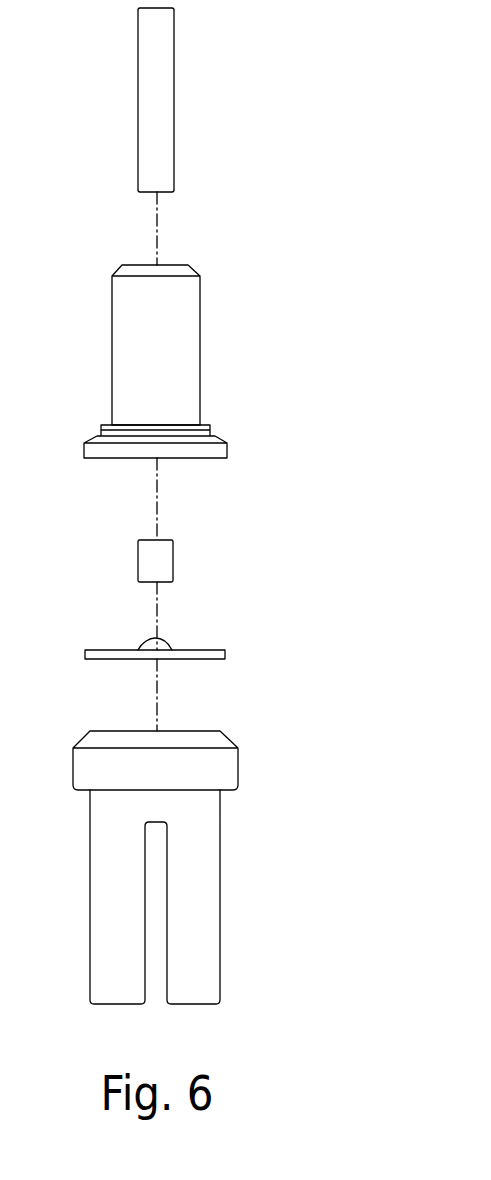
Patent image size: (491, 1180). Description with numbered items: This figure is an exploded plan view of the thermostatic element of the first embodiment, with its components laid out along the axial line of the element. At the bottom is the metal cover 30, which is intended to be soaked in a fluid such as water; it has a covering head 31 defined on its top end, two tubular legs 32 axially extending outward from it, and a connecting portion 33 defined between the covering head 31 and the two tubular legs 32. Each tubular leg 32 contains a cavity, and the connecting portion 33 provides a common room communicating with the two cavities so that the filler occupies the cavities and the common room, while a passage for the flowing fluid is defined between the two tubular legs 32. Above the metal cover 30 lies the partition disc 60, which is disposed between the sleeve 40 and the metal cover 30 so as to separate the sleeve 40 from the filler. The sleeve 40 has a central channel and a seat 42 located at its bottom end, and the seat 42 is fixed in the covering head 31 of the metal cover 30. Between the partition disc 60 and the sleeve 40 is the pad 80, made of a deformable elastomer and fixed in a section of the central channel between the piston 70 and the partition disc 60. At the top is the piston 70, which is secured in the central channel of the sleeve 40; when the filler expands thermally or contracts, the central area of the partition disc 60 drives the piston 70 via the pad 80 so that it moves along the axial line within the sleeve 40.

The metal cover 30 is at (178, 855).
The covering head 31 is at (238, 760).
The tubular legs 32 is at (112, 943).
The connecting portion 33 is at (155, 806).
The sleeve 40 is at (206, 332).
The seat 42 is at (227, 452).
The partition disc 60 is at (231, 654).
The piston 70 is at (180, 104).
The pad 80 is at (179, 559).